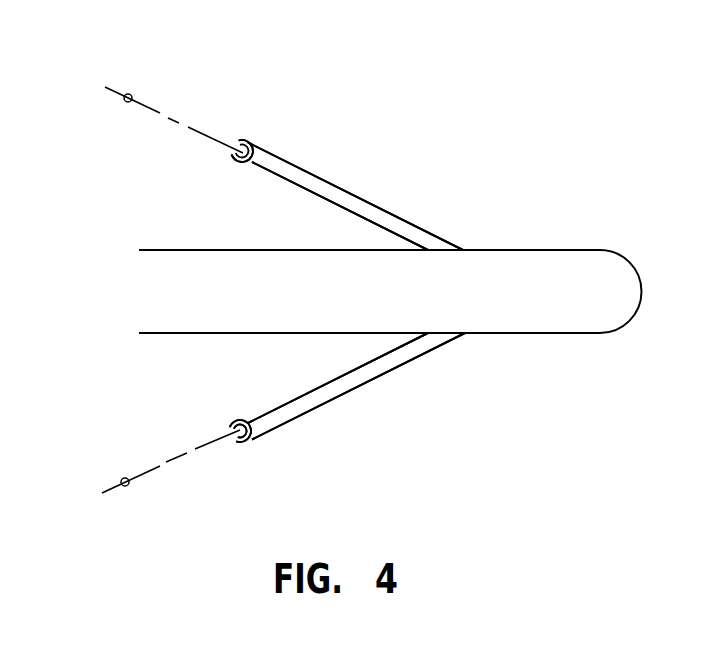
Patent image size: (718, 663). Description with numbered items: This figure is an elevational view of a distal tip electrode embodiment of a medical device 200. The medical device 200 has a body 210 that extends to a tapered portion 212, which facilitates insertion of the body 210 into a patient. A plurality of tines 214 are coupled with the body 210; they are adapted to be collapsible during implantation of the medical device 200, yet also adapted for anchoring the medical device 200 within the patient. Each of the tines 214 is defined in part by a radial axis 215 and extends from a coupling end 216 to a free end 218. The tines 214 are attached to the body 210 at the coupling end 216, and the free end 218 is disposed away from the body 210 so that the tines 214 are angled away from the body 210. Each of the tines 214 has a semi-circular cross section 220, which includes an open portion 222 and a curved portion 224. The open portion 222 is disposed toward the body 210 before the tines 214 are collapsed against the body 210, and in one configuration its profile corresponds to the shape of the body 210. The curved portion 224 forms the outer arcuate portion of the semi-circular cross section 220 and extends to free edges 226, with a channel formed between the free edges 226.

The medical device 200 is at (500, 123).
The body 210 is at (218, 333).
The tapered portion 212 is at (632, 258).
The tines 214 is at (306, 170).
The radial axis 215 is at (132, 96).
The coupling end 216 is at (430, 233).
The free end 218 is at (237, 140).
The semi-circular cross section 220 is at (233, 440).
The open portion 222 is at (233, 414).
The curved portion 224 is at (255, 434).
The free edges 226 is at (248, 162).